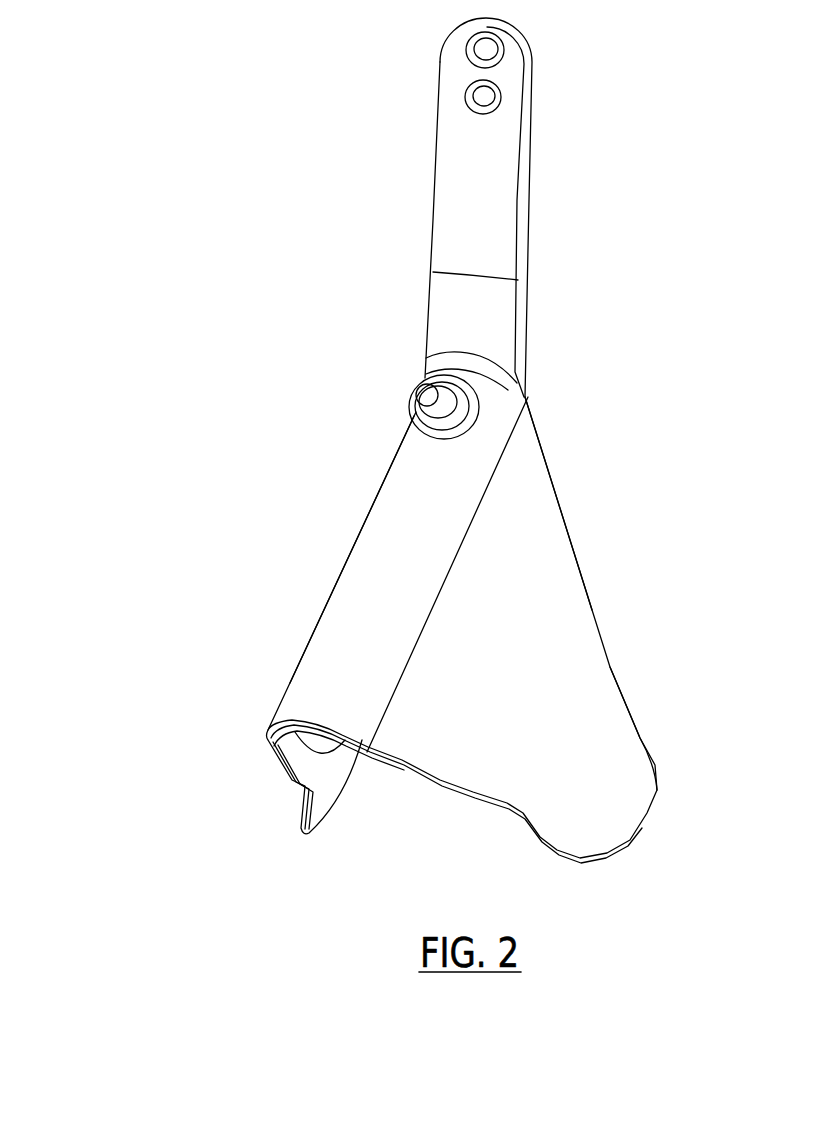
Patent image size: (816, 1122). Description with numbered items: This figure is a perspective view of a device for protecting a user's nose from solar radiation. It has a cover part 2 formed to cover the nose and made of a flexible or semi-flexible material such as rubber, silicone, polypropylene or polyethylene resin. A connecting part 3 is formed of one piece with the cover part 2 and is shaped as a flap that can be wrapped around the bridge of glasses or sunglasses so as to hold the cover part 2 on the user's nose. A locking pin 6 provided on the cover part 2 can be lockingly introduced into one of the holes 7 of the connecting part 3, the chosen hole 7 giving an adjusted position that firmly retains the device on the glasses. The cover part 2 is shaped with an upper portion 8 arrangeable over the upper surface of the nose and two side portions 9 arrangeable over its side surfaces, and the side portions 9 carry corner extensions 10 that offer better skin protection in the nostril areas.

The cover part 2 is at (190, 530).
The connecting part 3 is at (485, 205).
The locking pin 6 is at (424, 389).
The holes 7 is at (470, 92).
The upper portion 8 is at (335, 652).
The side portions 9 is at (556, 670).
The corner extensions 10 is at (633, 792).